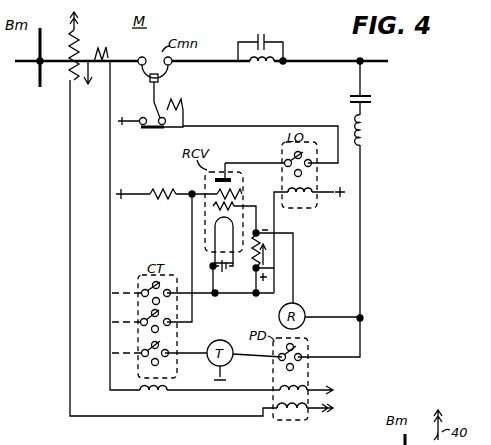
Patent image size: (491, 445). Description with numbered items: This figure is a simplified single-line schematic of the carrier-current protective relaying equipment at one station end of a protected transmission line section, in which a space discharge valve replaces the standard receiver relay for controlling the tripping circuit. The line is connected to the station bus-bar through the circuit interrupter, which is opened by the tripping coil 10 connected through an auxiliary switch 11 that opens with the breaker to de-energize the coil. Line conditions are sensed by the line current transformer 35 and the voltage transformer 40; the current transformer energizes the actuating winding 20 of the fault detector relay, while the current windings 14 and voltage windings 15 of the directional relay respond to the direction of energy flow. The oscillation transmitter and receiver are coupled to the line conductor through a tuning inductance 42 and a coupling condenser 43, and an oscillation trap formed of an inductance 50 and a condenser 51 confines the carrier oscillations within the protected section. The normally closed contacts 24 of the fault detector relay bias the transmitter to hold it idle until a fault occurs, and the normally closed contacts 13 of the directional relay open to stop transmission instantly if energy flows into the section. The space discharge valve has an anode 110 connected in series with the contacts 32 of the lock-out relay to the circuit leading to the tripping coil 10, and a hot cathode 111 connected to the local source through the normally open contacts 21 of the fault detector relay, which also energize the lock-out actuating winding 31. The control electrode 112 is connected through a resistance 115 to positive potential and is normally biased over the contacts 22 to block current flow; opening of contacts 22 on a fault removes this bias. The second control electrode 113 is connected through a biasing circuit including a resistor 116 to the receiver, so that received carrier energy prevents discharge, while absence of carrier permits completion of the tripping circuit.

The voltage transformer 40 is at (80, 40).
The line current transformer 35 is at (108, 50).
The tripping coil 10 is at (180, 98).
The auxiliary switch 11 is at (148, 130).
The condenser 51 is at (266, 38).
The inductance 50 is at (266, 68).
The coupling condenser 43 is at (372, 99).
The tuning inductance 42 is at (366, 130).
The contacts of lock-out relay 32 is at (304, 156).
The actuating winding of lock-out relay 31 is at (300, 196).
The anode 110 is at (232, 180).
The control electrode 112 is at (242, 194).
The resistance 115 is at (171, 178).
The second control electrode 113 is at (213, 206).
The hot cathode 111 is at (215, 228).
The resistor 116 is at (252, 246).
The normally open contacts of fault detector relay 21 is at (143, 286).
The contacts of fault detector relay 22 is at (144, 316).
The normally closed contacts of fault detector relay 24 is at (144, 349).
The actuating winding of fault detector relay 20 is at (162, 386).
The normally closed contacts of directional relay 13 is at (297, 350).
The current windings 14 is at (305, 386).
The voltage windings 15 is at (295, 412).